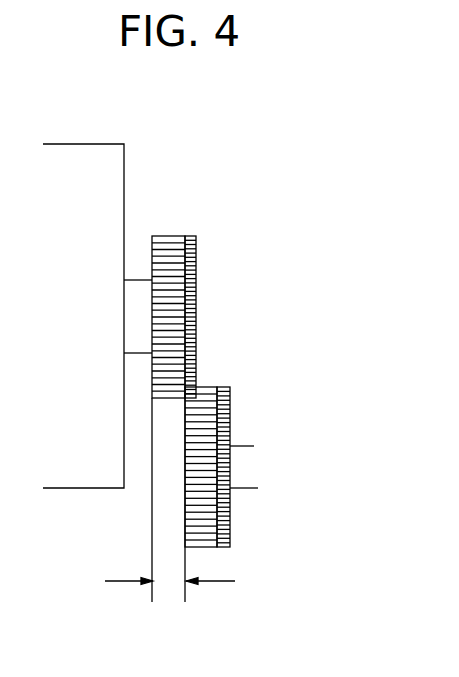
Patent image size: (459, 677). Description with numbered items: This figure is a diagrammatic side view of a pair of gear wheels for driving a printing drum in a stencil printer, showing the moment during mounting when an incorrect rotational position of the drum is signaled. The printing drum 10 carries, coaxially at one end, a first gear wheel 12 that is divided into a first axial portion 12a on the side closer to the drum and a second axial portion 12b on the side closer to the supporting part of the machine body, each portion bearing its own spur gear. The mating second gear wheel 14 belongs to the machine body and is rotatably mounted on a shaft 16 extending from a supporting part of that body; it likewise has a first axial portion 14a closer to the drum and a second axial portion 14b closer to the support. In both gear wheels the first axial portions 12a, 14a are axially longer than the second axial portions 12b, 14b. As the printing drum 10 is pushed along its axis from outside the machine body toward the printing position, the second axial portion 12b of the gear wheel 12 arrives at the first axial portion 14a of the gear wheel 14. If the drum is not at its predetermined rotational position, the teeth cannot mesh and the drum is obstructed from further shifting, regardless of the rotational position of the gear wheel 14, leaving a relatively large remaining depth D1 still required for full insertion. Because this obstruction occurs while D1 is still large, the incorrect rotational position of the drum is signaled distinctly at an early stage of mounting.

The printing drum 10 is at (79, 144).
The first gear wheel 12 is at (213, 284).
The first axial portion 12a is at (160, 236).
The second axial portion 12b is at (188, 236).
The second gear wheel 14 is at (261, 496).
The first axial portion 14a is at (198, 551).
The second axial portion 14b is at (223, 550).
The shaft 16 is at (242, 452).
The depth D1 is at (172, 582).